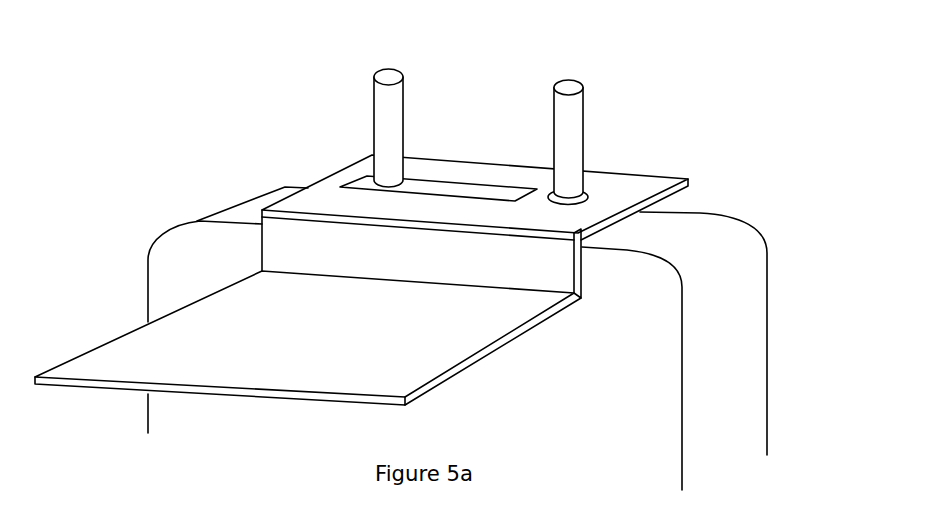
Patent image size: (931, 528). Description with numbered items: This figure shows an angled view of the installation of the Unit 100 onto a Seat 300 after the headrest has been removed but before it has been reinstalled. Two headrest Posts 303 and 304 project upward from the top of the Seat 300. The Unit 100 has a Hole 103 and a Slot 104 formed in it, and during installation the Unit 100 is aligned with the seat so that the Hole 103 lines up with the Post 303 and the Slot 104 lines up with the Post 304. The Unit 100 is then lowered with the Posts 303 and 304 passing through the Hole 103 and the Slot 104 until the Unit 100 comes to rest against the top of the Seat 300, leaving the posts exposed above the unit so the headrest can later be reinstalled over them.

The Unit 100 is at (361, 225).
The Hole 103 is at (590, 198).
The Slot 104 is at (437, 190).
The Seat 300 is at (718, 340).
The headrest Post 303 is at (572, 126).
The headrest Post 304 is at (392, 113).